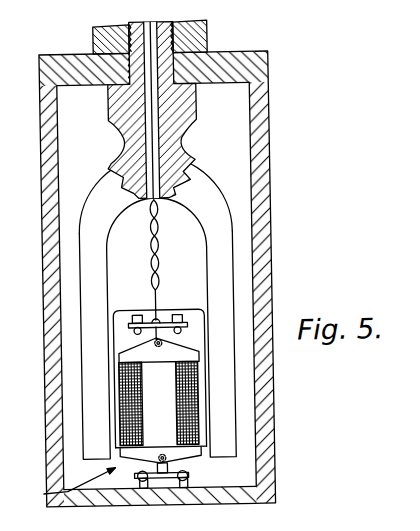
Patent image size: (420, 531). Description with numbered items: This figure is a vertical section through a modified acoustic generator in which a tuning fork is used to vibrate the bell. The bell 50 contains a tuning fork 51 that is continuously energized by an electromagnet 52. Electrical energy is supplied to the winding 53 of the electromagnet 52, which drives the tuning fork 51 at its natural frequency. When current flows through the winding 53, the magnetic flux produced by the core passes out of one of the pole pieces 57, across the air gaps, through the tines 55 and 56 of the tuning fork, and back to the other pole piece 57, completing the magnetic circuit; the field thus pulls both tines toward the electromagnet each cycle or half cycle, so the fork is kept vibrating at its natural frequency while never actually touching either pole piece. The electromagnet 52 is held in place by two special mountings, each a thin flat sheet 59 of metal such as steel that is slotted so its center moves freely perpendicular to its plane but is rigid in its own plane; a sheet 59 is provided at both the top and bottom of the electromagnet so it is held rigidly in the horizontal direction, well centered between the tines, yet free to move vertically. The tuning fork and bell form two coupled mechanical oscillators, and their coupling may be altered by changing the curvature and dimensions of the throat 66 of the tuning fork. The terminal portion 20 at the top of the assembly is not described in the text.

The terminal nut assembly 20 is at (149, 27).
The throat of the tuning fork 66 is at (184, 149).
The tuning fork 51 is at (234, 219).
The bell 50 is at (253, 271).
The thin flat sheet 59 is at (163, 314).
The pole piece 57 is at (198, 352).
The winding 53 is at (196, 404).
The tine 55 is at (91, 416).
The tine 56 is at (233, 437).
The electromagnet 52 is at (66, 484).